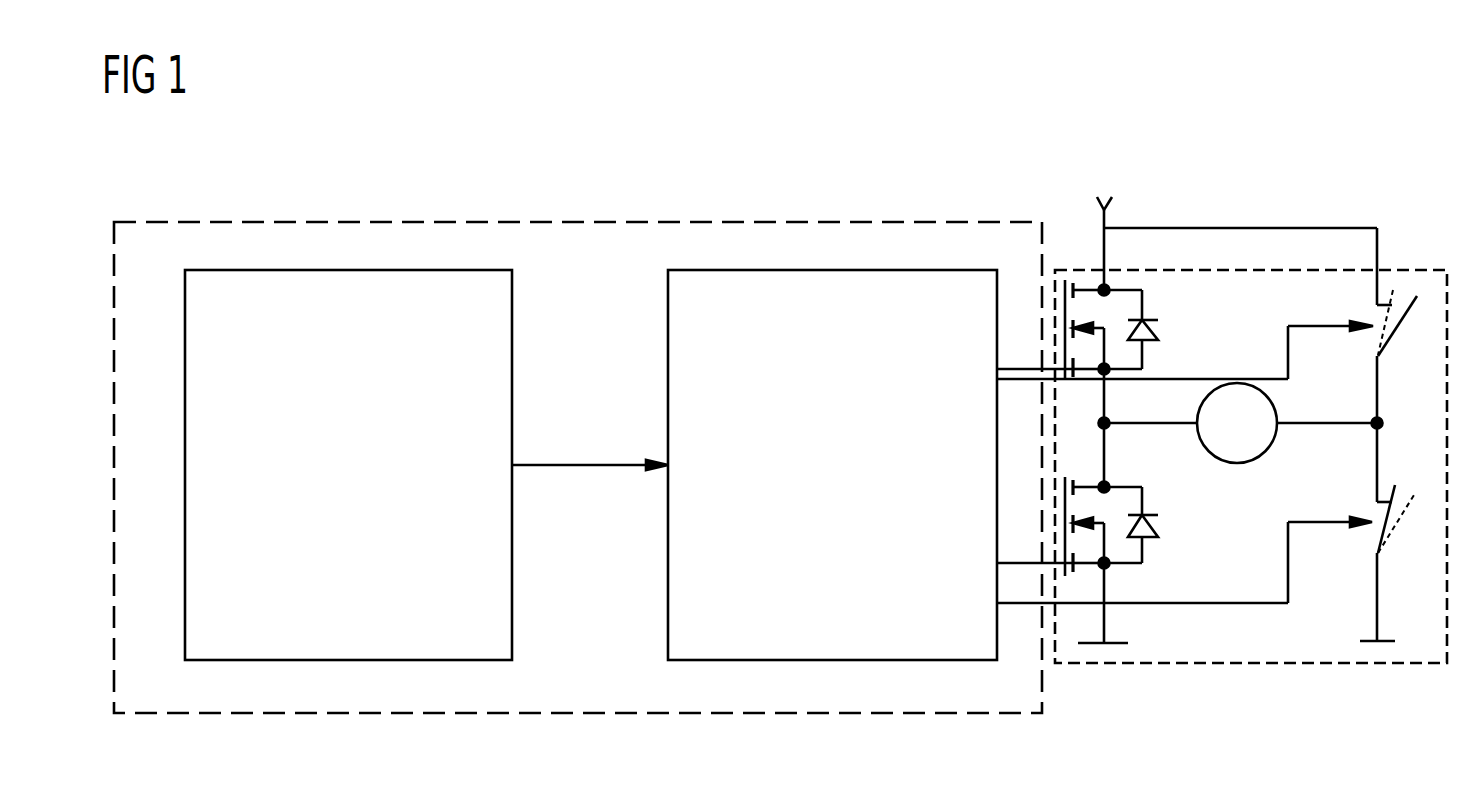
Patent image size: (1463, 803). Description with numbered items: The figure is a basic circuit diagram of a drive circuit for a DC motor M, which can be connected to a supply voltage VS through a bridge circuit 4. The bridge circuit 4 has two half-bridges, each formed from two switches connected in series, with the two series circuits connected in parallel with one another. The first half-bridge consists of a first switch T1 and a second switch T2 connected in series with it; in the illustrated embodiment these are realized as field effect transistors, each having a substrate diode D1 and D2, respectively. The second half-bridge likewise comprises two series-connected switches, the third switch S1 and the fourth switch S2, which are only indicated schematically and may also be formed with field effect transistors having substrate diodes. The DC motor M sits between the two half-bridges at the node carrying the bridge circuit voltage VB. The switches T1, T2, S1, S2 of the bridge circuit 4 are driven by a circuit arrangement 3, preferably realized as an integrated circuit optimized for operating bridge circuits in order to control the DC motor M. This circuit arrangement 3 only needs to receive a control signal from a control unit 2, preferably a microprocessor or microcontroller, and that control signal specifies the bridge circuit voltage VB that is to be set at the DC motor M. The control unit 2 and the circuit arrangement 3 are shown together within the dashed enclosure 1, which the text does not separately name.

The electronic control system 1 is at (226, 222).
The control unit 2 is at (360, 270).
The circuit arrangement 3 is at (795, 270).
The bridge circuit 4 is at (1269, 228).
The first switch T1 is at (1086, 305).
The second switch T2 is at (1087, 543).
The substrate diode D1 is at (1151, 329).
The substrate diode D2 is at (1151, 525).
The third switch S1 is at (1397, 325).
The fourth switch S2 is at (1388, 532).
The DC motor M is at (1287, 423).
The supply voltage VS is at (1105, 226).
The bridge circuit voltage VB is at (1129, 428).